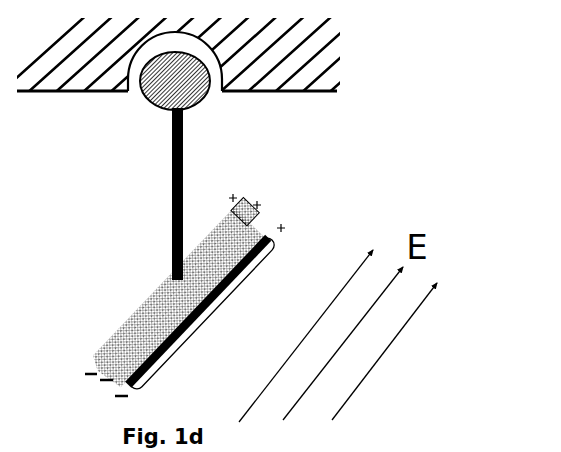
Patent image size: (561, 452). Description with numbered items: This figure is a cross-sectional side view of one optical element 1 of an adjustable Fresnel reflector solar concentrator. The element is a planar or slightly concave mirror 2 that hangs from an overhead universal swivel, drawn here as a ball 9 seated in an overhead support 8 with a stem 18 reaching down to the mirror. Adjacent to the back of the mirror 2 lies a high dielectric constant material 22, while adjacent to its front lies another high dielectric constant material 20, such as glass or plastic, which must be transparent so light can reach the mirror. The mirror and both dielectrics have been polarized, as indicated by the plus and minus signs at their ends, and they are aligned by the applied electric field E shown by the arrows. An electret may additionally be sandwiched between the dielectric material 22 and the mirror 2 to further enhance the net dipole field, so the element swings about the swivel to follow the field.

The optical element 1 is at (282, 313).
The mirror 2 is at (263, 234).
The support wall 8 is at (128, 82).
The ball pivot 9 is at (146, 106).
The pivot stem 18 is at (108, 236).
The high dielectric constant material 20 is at (162, 374).
The high dielectric constant material 22 is at (110, 335).